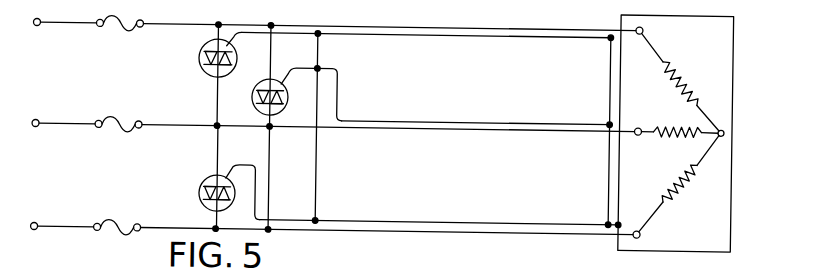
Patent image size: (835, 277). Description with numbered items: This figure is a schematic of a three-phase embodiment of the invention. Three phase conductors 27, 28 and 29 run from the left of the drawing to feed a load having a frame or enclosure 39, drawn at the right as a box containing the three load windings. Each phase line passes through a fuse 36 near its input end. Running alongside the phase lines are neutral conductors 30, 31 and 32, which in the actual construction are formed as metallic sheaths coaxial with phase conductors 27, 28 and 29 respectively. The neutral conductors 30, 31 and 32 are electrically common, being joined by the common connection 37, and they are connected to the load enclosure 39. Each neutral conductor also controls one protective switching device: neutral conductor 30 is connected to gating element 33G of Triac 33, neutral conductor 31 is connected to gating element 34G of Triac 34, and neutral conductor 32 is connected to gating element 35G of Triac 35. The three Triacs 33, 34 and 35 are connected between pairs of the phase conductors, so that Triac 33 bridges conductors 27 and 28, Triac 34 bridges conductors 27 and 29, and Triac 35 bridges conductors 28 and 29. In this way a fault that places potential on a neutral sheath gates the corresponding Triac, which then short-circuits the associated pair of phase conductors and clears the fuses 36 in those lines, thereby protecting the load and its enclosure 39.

The phase conductor 27 is at (363, 22).
The phase conductor 28 is at (391, 124).
The phase conductor 29 is at (400, 227).
The neutral conductor 30 is at (398, 30).
The neutral conductor 31 is at (413, 116).
The neutral conductor 32 is at (420, 216).
The Triac 33 is at (203, 68).
The gating element 33G is at (236, 48).
The Triac 34 is at (254, 106).
The gating element 34G is at (288, 67).
The Triac 35 is at (202, 199).
The gating element 35G is at (231, 168).
The fuses 36 is at (121, 29).
The common connection 37 is at (319, 146).
The load frame or enclosure 39 is at (735, 49).